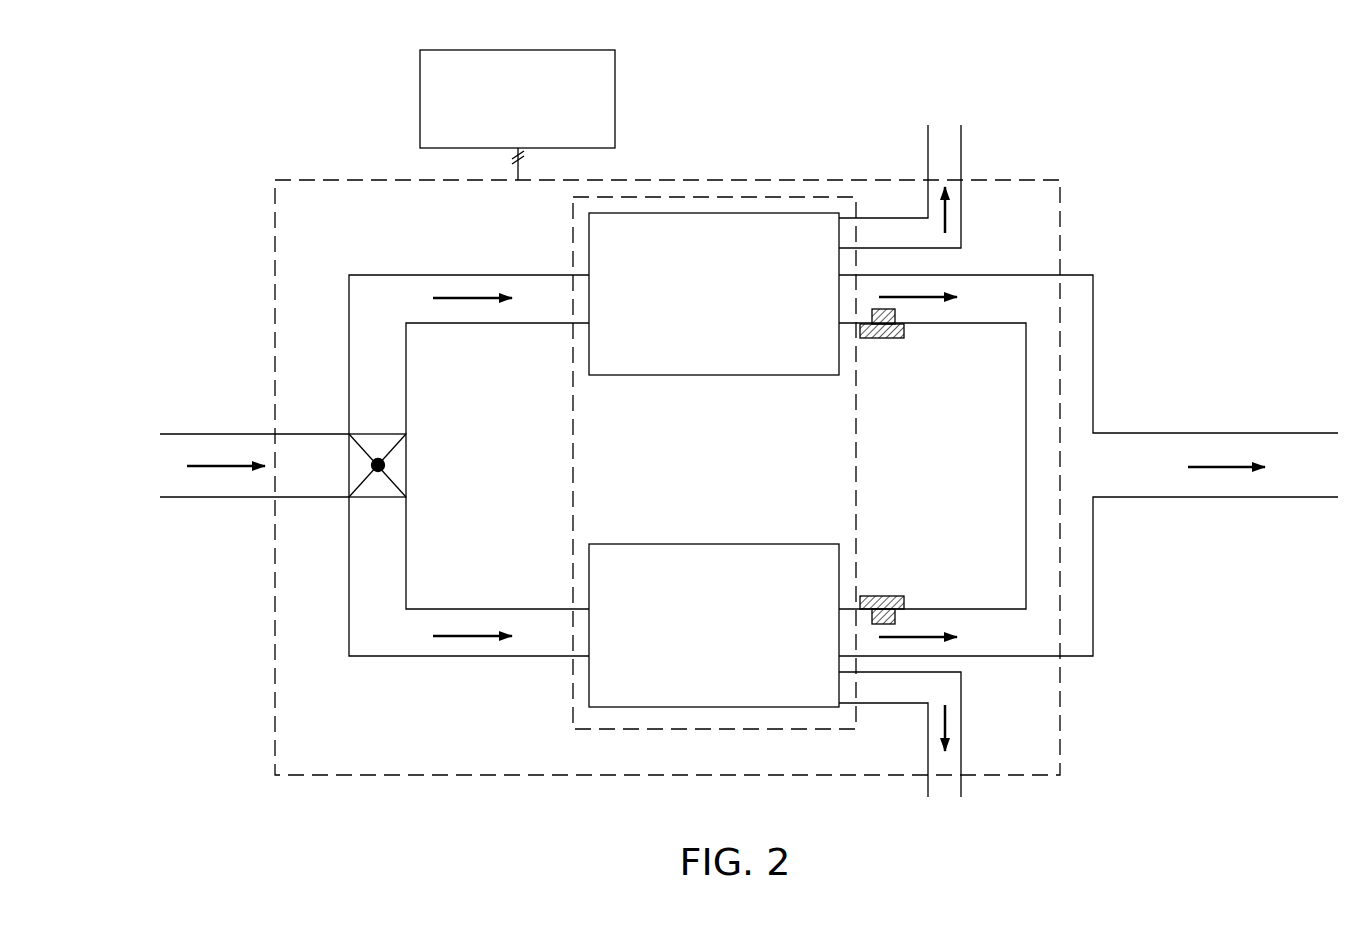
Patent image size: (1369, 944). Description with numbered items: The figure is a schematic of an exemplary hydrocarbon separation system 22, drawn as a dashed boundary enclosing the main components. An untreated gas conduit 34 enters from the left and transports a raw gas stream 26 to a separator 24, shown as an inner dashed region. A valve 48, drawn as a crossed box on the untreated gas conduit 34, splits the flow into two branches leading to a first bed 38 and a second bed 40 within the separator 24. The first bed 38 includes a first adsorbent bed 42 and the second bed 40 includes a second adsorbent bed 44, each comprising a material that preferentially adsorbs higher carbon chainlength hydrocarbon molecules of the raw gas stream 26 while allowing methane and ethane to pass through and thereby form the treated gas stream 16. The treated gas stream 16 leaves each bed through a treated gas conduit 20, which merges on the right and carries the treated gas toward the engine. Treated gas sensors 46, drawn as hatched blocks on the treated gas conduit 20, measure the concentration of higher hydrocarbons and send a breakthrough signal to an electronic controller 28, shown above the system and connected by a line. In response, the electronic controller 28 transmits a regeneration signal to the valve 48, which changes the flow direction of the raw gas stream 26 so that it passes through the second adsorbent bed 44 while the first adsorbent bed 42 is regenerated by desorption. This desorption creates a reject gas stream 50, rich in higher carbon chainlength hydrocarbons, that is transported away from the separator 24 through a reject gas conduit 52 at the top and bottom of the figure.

The treated gas stream 16 is at (974, 313).
The treated gas conduit 20 is at (975, 275).
The hydrocarbon separation system 22 is at (1049, 776).
The separator 24 is at (627, 729).
The raw gas stream 26 is at (299, 476).
The electronic controller 28 is at (504, 123).
The untreated gas conduit 34 is at (468, 274).
The first bed 38 is at (713, 375).
The second bed 40 is at (713, 544).
The first adsorbent bed 42 is at (701, 308).
The second adsorbent bed 44 is at (701, 639).
The treated gas sensor 46 is at (880, 340).
The valve 48 is at (383, 463).
The reject gas stream 50 is at (884, 246).
The reject gas conduit 52 is at (961, 218).